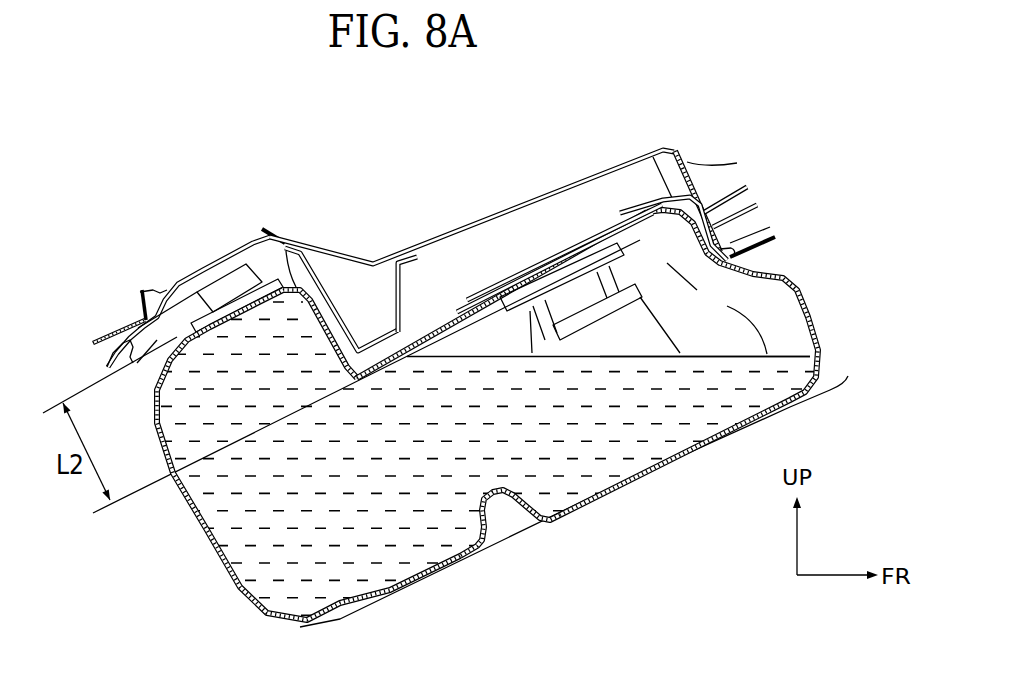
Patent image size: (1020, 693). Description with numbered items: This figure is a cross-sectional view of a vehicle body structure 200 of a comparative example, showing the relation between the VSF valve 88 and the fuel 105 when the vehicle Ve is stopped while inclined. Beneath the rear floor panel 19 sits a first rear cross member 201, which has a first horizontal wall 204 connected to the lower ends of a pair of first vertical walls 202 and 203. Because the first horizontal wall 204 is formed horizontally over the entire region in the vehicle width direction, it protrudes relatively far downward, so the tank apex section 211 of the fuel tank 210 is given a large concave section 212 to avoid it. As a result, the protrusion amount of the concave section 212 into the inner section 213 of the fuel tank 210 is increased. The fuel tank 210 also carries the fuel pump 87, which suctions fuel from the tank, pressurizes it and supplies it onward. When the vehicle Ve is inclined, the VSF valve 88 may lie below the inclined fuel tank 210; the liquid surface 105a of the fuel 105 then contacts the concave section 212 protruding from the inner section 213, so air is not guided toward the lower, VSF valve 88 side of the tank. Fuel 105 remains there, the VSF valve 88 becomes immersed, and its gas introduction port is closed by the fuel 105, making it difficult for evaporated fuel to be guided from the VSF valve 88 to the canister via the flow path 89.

The rear floor panel 19 is at (538, 193).
The fuel pump 87 is at (643, 314).
The VSF valve 88 is at (232, 285).
The flow path 89 is at (177, 337).
The fuel 105 is at (757, 363).
The liquid surface 105a is at (652, 357).
The vehicle body structure 200 is at (201, 196).
The first rear cross member 201 is at (337, 283).
The first vertical wall 202 is at (406, 288).
The first vertical wall 203 is at (338, 318).
The first horizontal wall 204 is at (398, 375).
The fuel tank 210 is at (214, 571).
The tank apex section 211 is at (432, 327).
The concave section 212 is at (377, 372).
The inner section 213 is at (457, 486).
The vehicle Ve is at (252, 136).